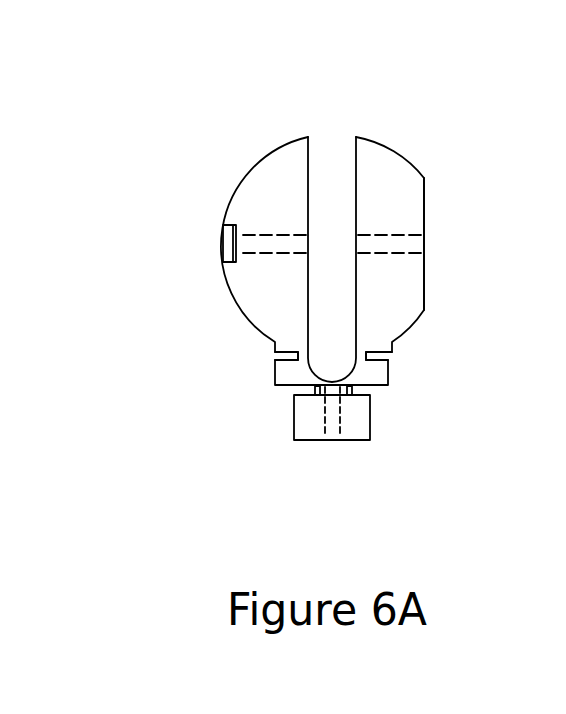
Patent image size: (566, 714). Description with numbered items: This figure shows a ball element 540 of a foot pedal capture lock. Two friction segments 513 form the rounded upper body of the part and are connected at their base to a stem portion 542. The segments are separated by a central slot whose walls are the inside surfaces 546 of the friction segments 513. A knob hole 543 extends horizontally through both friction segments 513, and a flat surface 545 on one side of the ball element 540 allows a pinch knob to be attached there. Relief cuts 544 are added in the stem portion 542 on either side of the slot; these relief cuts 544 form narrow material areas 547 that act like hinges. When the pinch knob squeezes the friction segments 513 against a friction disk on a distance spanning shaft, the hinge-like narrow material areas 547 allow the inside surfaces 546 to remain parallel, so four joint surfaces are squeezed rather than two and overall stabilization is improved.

The ball element 540 is at (247, 107).
The friction segments 513 is at (373, 209).
The flat surface 545 is at (424, 200).
The inside surfaces 546 is at (356, 167).
The knob hole 543 is at (242, 247).
The relief cuts 544 is at (300, 388).
The narrow material areas 547 is at (318, 385).
The stem portion 542 is at (413, 419).